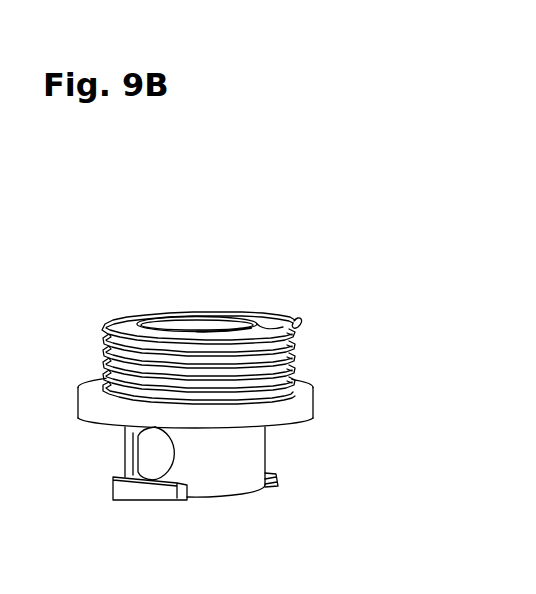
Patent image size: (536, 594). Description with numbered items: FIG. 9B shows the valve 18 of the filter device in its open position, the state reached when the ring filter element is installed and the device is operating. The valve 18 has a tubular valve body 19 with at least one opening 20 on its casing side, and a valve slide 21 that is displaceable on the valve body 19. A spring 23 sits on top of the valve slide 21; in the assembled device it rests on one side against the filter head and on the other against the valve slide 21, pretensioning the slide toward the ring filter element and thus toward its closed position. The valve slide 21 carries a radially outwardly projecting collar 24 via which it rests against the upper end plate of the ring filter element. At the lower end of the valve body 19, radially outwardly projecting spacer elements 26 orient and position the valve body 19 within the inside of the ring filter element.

The valve 18 is at (236, 295).
The tubular valve body 19 is at (217, 472).
The opening 20 is at (142, 459).
The valve slide 21 is at (323, 370).
The spring 23 is at (293, 325).
The radially outwardly projecting collar 24 is at (305, 407).
The spacer elements 26 is at (137, 491).